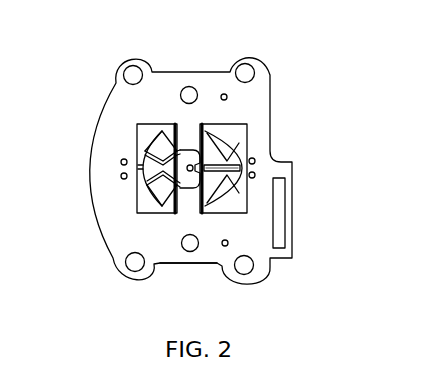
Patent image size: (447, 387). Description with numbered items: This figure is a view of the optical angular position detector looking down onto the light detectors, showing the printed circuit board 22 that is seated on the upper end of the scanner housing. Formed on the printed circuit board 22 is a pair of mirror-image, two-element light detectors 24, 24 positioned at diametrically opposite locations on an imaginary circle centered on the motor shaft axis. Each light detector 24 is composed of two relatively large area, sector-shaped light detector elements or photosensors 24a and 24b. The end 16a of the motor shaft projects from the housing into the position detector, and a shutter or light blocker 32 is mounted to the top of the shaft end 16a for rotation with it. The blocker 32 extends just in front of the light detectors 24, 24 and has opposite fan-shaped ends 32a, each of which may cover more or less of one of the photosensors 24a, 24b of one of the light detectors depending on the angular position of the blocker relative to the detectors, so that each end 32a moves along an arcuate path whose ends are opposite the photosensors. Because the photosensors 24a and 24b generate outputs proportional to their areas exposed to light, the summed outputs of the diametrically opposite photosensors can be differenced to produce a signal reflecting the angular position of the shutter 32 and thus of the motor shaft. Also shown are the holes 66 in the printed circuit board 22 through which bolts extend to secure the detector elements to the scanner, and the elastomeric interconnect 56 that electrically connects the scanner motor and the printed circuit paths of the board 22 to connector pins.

The printed circuit board 22 is at (117, 110).
The motor shaft end 16a is at (195, 263).
The holes 66 is at (133, 75).
The elastomeric interconnect 56 is at (279, 236).
The light detector 24 is at (132, 208).
The photosensor 24a is at (157, 141).
The photosensor 24b is at (226, 146).
The shutter 32 is at (187, 150).
The fan-shaped end 32a is at (152, 175).